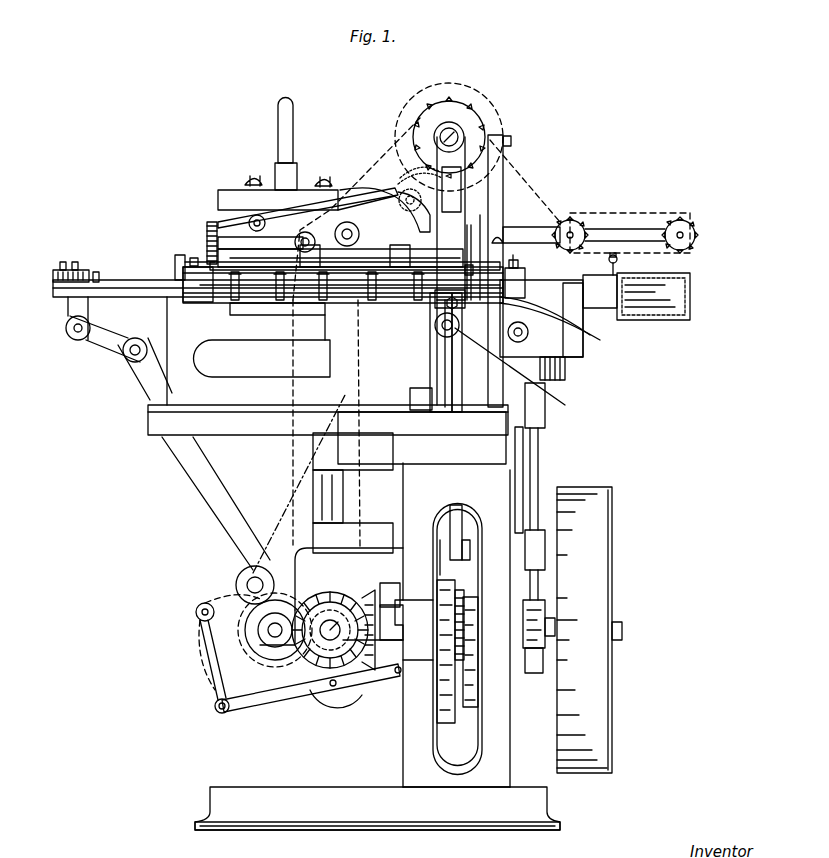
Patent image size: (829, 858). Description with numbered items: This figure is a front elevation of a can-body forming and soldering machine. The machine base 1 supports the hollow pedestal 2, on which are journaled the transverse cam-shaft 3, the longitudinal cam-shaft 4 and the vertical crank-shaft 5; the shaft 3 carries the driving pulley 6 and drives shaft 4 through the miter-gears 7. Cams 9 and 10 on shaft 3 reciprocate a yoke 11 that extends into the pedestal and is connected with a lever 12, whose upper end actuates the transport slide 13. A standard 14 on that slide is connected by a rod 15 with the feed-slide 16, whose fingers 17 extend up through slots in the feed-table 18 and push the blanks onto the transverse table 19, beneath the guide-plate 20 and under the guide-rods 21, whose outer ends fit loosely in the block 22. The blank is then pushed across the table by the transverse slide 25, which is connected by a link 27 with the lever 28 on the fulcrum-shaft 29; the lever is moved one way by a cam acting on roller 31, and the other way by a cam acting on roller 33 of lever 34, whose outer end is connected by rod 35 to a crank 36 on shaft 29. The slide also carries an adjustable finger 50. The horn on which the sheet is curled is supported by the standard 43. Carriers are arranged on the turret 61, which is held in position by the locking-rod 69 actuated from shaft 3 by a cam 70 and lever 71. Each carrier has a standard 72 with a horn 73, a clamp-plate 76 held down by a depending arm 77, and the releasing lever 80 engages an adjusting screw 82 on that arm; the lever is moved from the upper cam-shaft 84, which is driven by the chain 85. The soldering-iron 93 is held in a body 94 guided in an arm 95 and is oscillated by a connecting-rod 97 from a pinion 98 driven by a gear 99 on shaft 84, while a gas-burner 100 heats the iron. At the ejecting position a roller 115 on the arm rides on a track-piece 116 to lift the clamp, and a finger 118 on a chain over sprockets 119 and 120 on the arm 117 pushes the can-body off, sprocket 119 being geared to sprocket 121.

The machine base 1 is at (330, 815).
The hollow pedestal 2 is at (500, 760).
The transverse cam-shaft 3 is at (622, 630).
The longitudinal cam-shaft 4 is at (325, 636).
The vertical crank-shaft 5 is at (330, 480).
The driving pulley 6 is at (584, 630).
The miter-gears 7 is at (352, 600).
The cam 9 is at (440, 700).
The cam 10 is at (476, 695).
The yoke 11 is at (464, 590).
The lever 12 is at (458, 528).
The transport slide 13 is at (438, 405).
The standard 14 is at (440, 372).
The rod 15 is at (512, 352).
The feed-slide 16 is at (322, 308).
The fingers 17 is at (280, 298).
The feed-table 18 is at (230, 290).
The transverse table 19 is at (160, 296).
The guide-plate 20 is at (218, 280).
The guide-rods 21 is at (96, 272).
The block 22 is at (68, 268).
The transverse slide 25 is at (112, 280).
The link 27 is at (105, 338).
The lever 28 is at (185, 458).
The fulcrum-shaft 29 is at (250, 583).
The roller 31 is at (270, 650).
The roller 33 is at (335, 703).
The lever 34 is at (294, 692).
The rod 35 is at (208, 668).
The crank 36 is at (200, 605).
The standard 43 is at (456, 395).
The adjustable finger 50 is at (180, 256).
The turret 61 is at (566, 370).
The locking-rod 69 is at (537, 452).
The cam 70 is at (548, 640).
The lever 71 is at (533, 672).
The standard 72 is at (572, 343).
The horn 73 is at (600, 291).
The clamp-plate 76 is at (680, 275).
The depending arm 77 is at (529, 333).
The releasing lever 80 is at (504, 191).
The adjusting screw 82 is at (524, 276).
The upper cam-shaft 84 is at (462, 133).
The chain 85 is at (383, 158).
The soldering-iron 93 is at (225, 220).
The body 94 is at (300, 192).
The arm 95 is at (310, 237).
The connecting-rod 97 is at (350, 205).
The pinion 98 is at (402, 195).
The gear 99 is at (404, 176).
The gas-burner 100 is at (262, 270).
The roller 115 is at (600, 333).
The track-piece 116 is at (605, 342).
The arm 117 is at (612, 228).
The finger 118 is at (617, 268).
The sprocket 119 is at (572, 228).
The sprocket 120 is at (688, 225).
The sprocket 121 is at (553, 228).